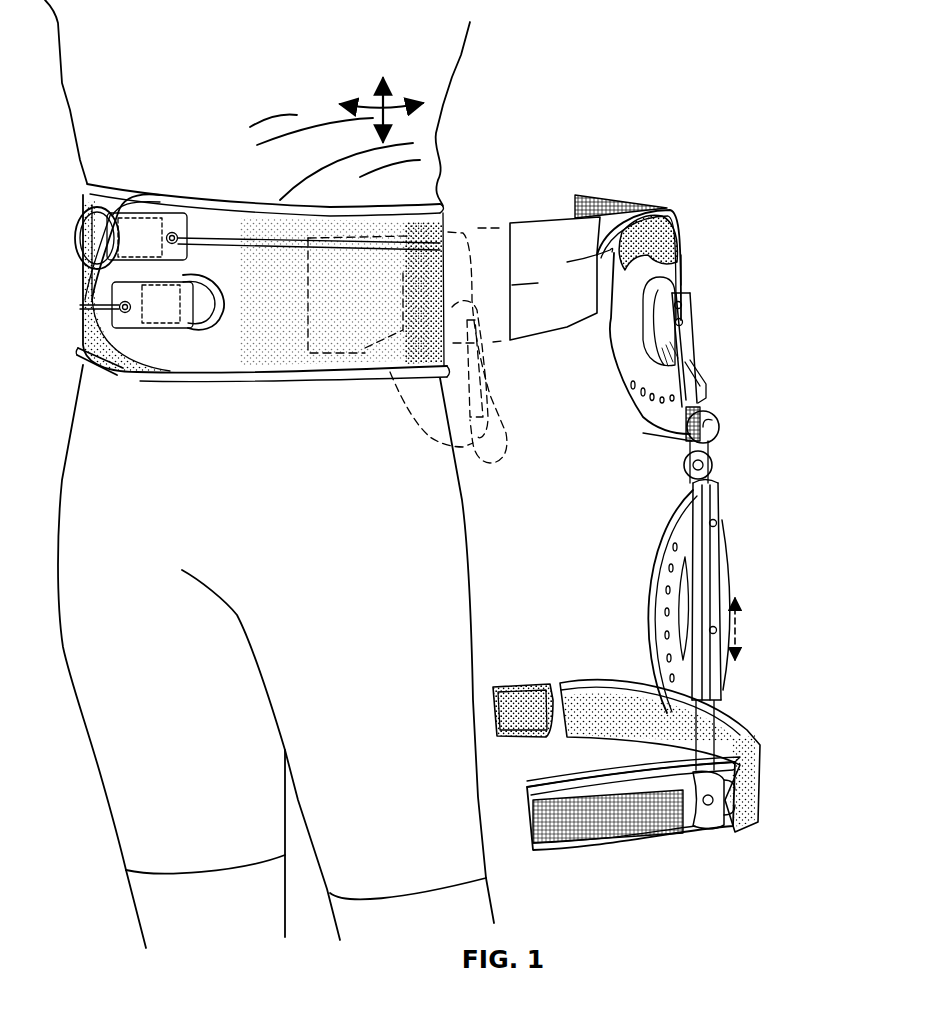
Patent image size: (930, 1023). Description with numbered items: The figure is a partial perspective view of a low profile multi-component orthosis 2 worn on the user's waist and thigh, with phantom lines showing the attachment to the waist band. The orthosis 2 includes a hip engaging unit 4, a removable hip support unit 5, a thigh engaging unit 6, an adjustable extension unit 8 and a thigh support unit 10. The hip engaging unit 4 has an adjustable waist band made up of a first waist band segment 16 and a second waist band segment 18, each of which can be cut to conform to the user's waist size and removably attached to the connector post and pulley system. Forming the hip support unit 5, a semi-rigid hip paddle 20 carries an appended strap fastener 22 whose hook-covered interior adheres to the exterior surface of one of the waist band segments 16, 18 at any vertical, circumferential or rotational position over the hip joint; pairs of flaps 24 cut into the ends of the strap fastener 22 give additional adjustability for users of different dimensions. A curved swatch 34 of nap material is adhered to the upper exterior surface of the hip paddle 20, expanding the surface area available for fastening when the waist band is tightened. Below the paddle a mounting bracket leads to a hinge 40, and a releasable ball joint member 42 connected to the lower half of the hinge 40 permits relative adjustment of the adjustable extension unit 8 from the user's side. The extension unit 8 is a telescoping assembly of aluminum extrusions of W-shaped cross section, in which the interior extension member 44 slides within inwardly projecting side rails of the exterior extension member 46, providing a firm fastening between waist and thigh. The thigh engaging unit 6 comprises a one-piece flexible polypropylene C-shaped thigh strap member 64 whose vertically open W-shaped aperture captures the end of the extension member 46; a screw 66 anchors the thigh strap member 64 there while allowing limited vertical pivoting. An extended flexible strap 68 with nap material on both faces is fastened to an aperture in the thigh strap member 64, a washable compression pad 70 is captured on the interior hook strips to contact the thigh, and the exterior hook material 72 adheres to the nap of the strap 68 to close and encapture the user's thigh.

The multi-component orthosis 2 is at (717, 101).
The hip engaging unit 4 is at (155, 190).
The first waist band segment 16 is at (232, 392).
The second waist band segment 18 is at (83, 333).
The strap fastener 22 is at (667, 210).
The flaps 24 is at (536, 236).
The curved swatch of nap material 34 is at (670, 245).
The removable hip support unit 5 is at (688, 273).
The semi-rigid hip paddle 20 is at (689, 310).
The hinge 40 is at (703, 425).
The releasable ball joint member 42 is at (691, 465).
The adjustable extension unit 8 is at (731, 490).
The thigh support unit 10 is at (683, 552).
The interior extension member 44 is at (710, 688).
The extended flexible strap 68 is at (607, 683).
The exterior extension member 46 is at (667, 700).
The thigh engaging unit 6 is at (752, 733).
The compression pad 70 is at (632, 773).
The thigh strap member 64 is at (562, 802).
The exterior hook material 72 is at (621, 838).
The screw 66 is at (709, 812).